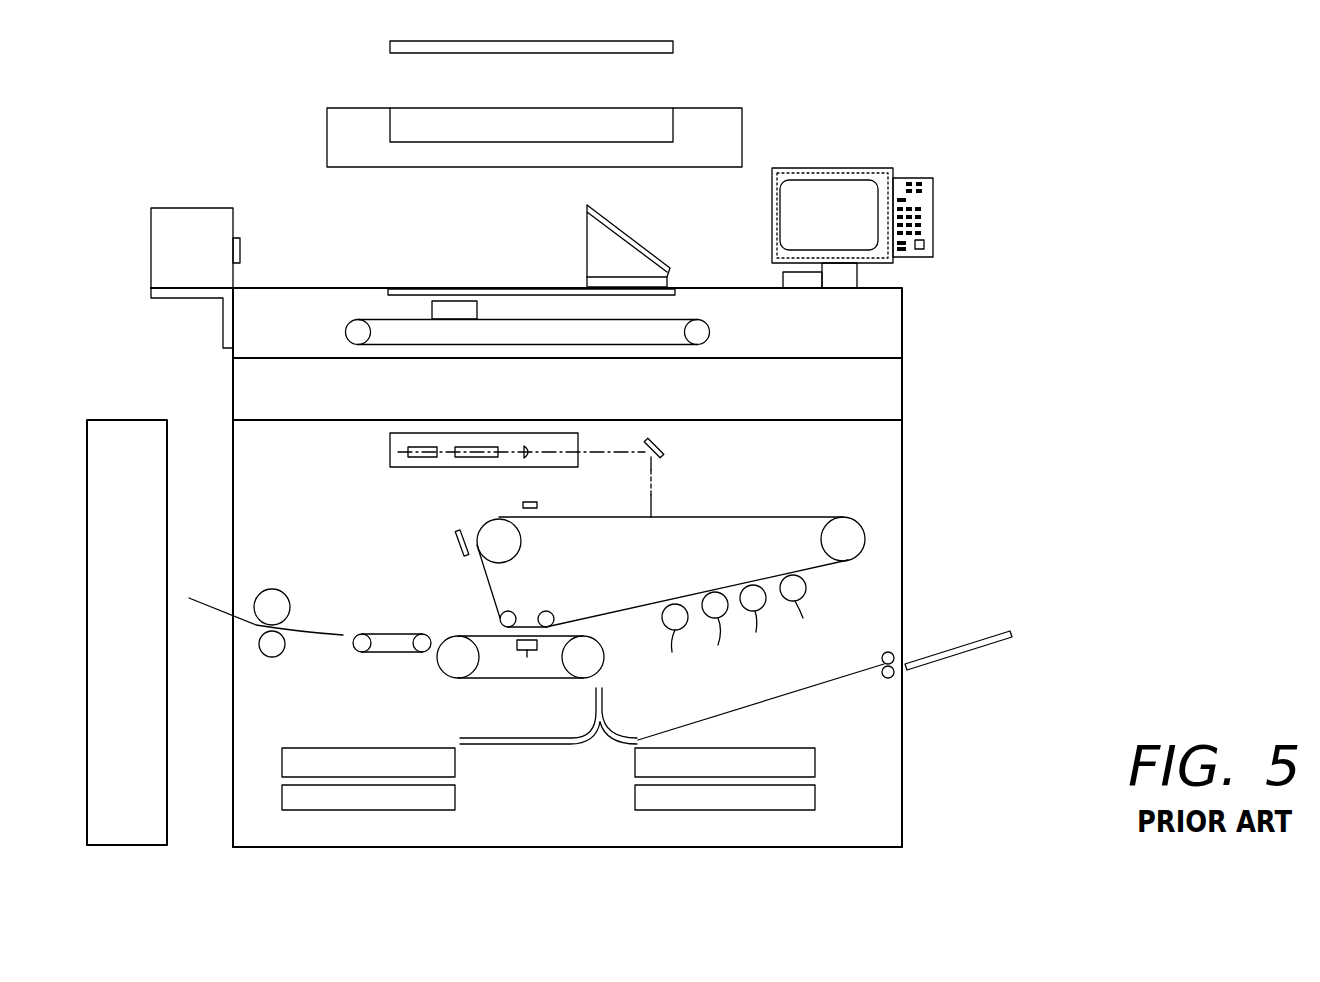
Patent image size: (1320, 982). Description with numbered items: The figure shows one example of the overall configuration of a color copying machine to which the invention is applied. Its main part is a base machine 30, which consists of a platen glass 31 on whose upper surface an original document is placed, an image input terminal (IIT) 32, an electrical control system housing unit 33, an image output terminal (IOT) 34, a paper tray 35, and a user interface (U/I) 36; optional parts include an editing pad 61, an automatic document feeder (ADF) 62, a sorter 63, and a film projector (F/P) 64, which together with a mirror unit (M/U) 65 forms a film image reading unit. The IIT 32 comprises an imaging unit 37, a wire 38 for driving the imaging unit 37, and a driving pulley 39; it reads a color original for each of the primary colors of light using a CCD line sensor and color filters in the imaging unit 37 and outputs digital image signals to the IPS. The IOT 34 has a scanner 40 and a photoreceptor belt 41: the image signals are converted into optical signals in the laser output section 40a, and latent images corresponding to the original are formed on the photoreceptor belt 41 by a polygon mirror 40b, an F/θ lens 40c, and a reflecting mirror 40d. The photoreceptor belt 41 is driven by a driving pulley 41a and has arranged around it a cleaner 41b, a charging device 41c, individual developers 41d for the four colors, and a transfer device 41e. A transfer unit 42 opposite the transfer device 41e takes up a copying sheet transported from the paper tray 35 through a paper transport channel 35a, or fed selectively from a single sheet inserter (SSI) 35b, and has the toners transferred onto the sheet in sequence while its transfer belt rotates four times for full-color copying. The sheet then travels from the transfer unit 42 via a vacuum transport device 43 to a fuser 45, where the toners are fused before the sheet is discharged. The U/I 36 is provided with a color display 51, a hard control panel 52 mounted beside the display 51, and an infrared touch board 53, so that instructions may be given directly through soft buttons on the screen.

The base machine 30 is at (872, 850).
The platen glass 31 is at (488, 289).
The image input terminal (IIT) 32 is at (870, 325).
The electrical control system housing unit 33 is at (872, 395).
The image output terminal (IOT) 34 is at (824, 502).
The paper tray 35 is at (620, 776).
The paper transport channel 35a is at (604, 710).
The single sheet inserter (SSI) 35b is at (960, 655).
The user interface (U/I) 36 is at (850, 183).
The imaging unit 37 is at (449, 307).
The wire 38 is at (382, 318).
The driving pulley 39 is at (697, 331).
The scanner 40 is at (518, 475).
The laser output section 40a is at (418, 457).
The polygon mirror 40b is at (462, 457).
The F/θ lens 40c is at (530, 458).
The reflecting mirror 40d is at (662, 448).
The photoreceptor belt 41 is at (621, 577).
The driving pulley 41a is at (510, 547).
The cleaner 41b is at (455, 541).
The charging device 41c is at (540, 505).
The developers 41d is at (764, 668).
The transfer device 41e is at (525, 662).
The transfer unit 42 is at (487, 683).
The vacuum transport device 43 is at (374, 658).
The fuser 45 is at (272, 582).
The color display 51 is at (858, 192).
The hard control panel 52 is at (928, 205).
The infrared touch board 53 is at (790, 170).
The editing pad 61 is at (394, 43).
The automatic document feeder (ADF) 62 is at (722, 108).
The sorter 63 is at (104, 723).
The film projector (F/P) 64 is at (210, 208).
The mirror unit (M/U) 65 is at (614, 247).